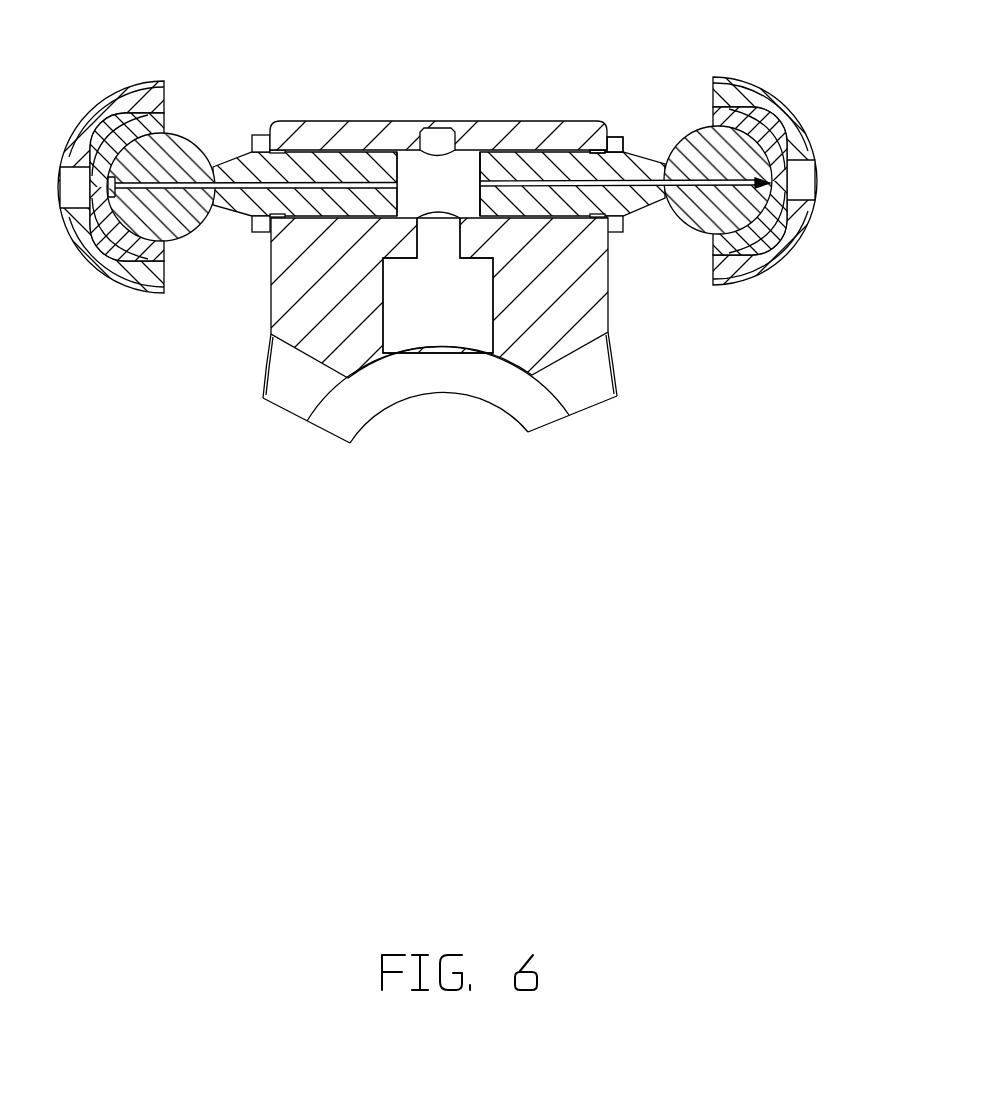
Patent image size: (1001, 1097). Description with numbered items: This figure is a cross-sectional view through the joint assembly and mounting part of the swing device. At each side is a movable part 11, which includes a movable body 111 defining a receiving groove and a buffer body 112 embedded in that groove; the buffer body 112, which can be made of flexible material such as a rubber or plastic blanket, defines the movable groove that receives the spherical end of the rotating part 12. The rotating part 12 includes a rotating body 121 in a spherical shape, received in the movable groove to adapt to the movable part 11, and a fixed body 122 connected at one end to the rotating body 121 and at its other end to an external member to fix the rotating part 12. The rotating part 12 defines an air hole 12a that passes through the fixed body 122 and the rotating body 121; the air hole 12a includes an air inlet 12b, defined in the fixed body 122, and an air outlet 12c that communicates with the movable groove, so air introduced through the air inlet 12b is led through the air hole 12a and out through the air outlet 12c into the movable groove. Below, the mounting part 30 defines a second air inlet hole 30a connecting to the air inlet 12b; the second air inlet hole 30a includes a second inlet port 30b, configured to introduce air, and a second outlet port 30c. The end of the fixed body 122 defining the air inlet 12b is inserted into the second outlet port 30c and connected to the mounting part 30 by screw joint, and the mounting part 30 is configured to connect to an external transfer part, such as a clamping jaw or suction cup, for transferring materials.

The movable part 11 is at (480, 179).
The movable body 111 is at (793, 147).
The buffer body 112 is at (753, 118).
The rotating part 12 is at (496, 159).
The rotating body 121 is at (722, 150).
The fixed body 122 is at (617, 167).
The air hole 12a is at (528, 179).
The air inlet 12b is at (483, 187).
The air outlet 12c is at (771, 186).
The mounting part 30 is at (443, 262).
The second air inlet hole 30a is at (459, 176).
The second inlet port 30b is at (438, 243).
The second outlet port 30c is at (604, 143).